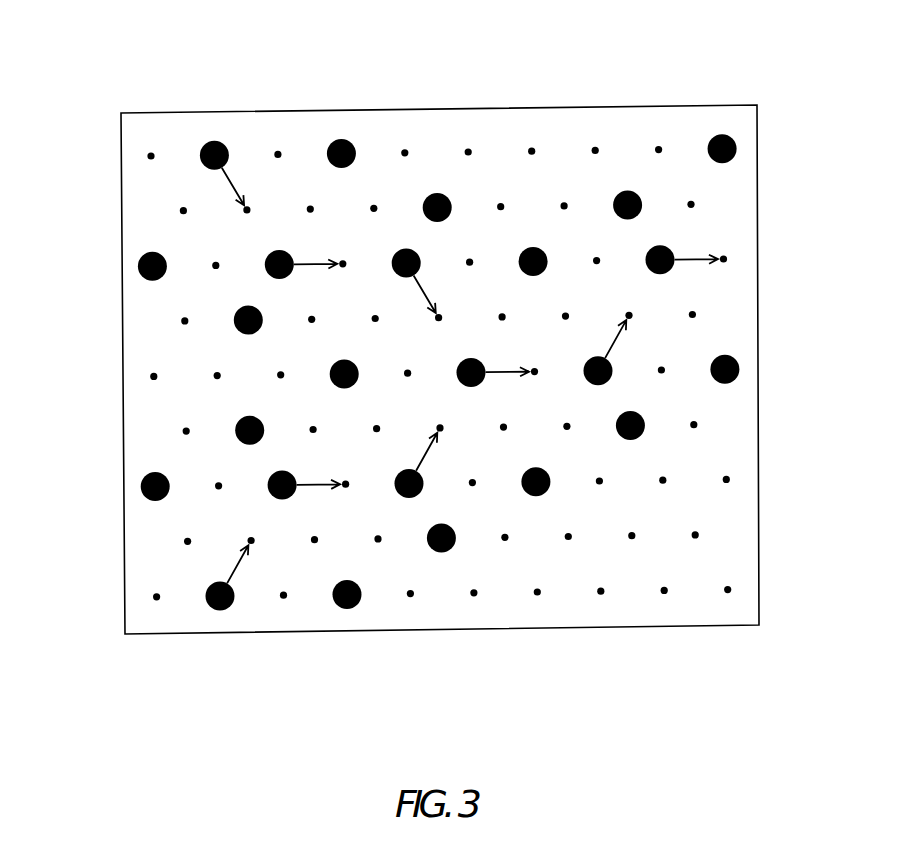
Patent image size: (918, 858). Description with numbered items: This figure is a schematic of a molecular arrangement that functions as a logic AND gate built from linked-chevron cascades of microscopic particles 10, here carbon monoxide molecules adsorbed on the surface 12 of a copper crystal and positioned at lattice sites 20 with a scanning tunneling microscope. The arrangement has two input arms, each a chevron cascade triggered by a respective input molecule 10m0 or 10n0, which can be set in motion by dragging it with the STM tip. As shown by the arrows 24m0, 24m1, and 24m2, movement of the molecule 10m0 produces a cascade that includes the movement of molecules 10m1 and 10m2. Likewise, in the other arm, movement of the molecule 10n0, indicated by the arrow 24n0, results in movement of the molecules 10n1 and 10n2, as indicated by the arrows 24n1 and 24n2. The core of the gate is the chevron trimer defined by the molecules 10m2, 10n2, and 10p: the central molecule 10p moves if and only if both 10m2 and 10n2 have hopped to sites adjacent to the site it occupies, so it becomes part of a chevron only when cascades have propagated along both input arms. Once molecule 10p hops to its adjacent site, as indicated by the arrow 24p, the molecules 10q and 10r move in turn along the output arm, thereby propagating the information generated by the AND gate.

The microscopic particle 10 is at (638, 196).
The input molecule of first arm 10m0 is at (214, 142).
The first-arm cascade molecule 10m1 is at (279, 250).
The first-arm terminal molecule 10m2 is at (405, 248).
The input molecule of second arm 10n0 is at (208, 607).
The second-arm cascade molecule 10n1 is at (283, 500).
The second-arm terminal molecule 10n2 is at (404, 497).
The central AND-gate molecule 10p is at (480, 382).
The output arm molecule 10q is at (612, 370).
The output arm molecule 10r is at (673, 252).
The surface 12 is at (150, 298).
The lattice site 20 is at (150, 152).
The movement arrow 24m0 is at (228, 180).
The movement arrow 24m1 is at (318, 266).
The movement arrow 24m2 is at (428, 290).
The movement arrow 24n0 is at (233, 567).
The movement arrow 24n1 is at (320, 485).
The movement arrow 24n2 is at (430, 452).
The movement arrow 24p is at (513, 376).